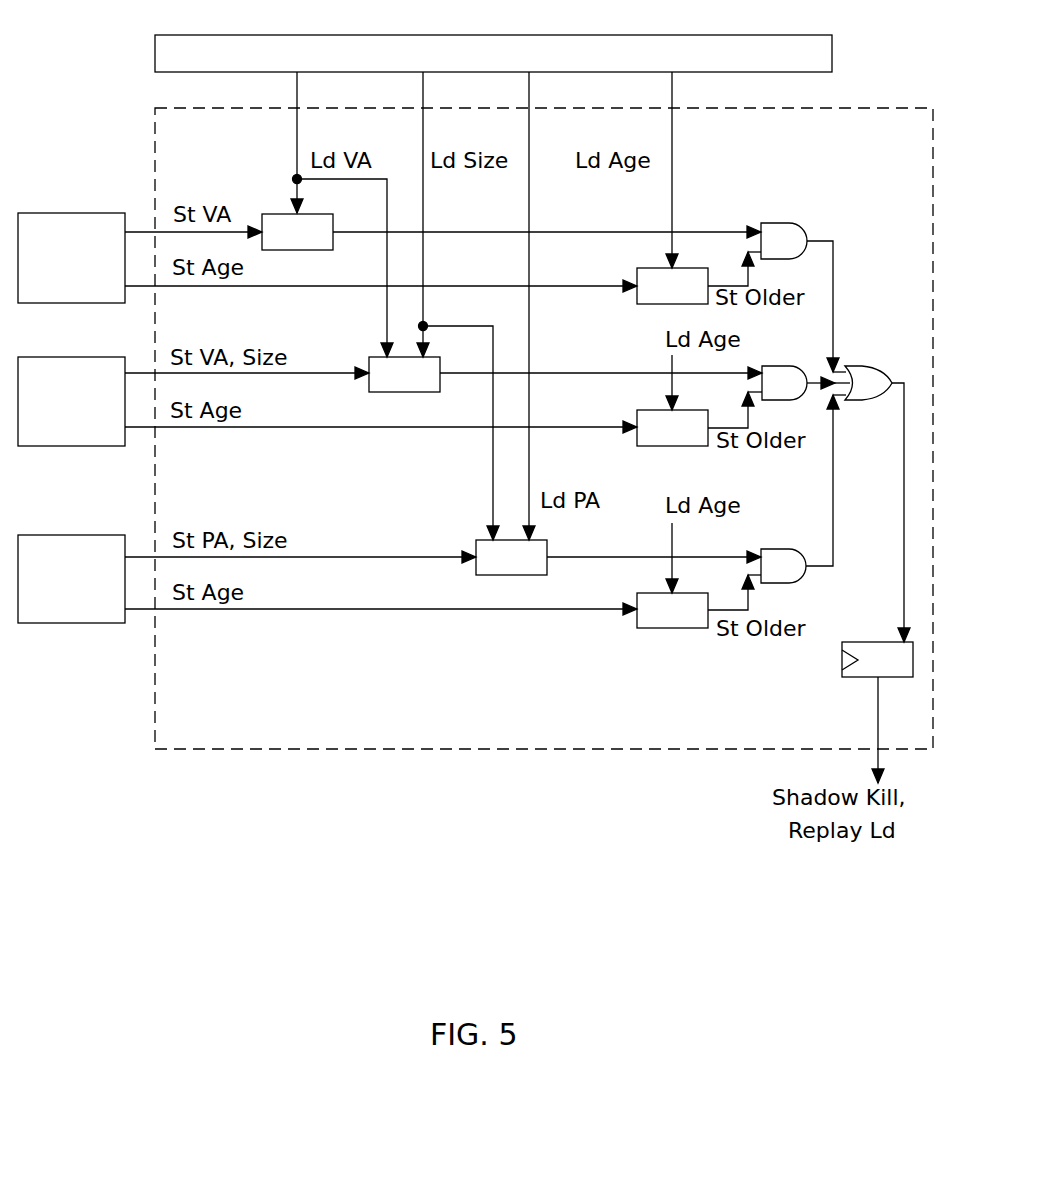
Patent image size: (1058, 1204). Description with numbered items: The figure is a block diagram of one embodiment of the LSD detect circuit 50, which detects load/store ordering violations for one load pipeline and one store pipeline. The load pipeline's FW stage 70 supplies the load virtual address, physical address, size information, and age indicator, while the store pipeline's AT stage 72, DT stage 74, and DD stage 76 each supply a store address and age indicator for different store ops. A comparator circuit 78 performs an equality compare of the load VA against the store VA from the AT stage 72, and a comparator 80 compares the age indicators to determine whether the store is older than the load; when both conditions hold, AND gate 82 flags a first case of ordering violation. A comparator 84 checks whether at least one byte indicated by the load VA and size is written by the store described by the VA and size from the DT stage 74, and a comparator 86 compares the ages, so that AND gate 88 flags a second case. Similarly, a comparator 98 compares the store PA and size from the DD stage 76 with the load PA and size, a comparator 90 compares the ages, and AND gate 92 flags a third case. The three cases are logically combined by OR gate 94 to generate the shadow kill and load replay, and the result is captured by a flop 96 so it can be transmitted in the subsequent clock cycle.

The LSD detect circuit 50 is at (544, 428).
The FW stage 70 is at (832, 52).
The AT stage 72 is at (27, 213).
The DT stage 74 is at (27, 357).
The DD stage 76 is at (35, 535).
The comparator circuit 78 is at (298, 250).
The comparator 80 is at (668, 304).
The AND gate 82 is at (780, 223).
The comparator 84 is at (403, 392).
The comparator 86 is at (668, 446).
The AND gate 88 is at (782, 366).
The comparator 90 is at (668, 628).
The AND gate 92 is at (780, 549).
The OR gate 94 is at (862, 366).
The flop 96 is at (866, 677).
The comparator 98 is at (510, 575).